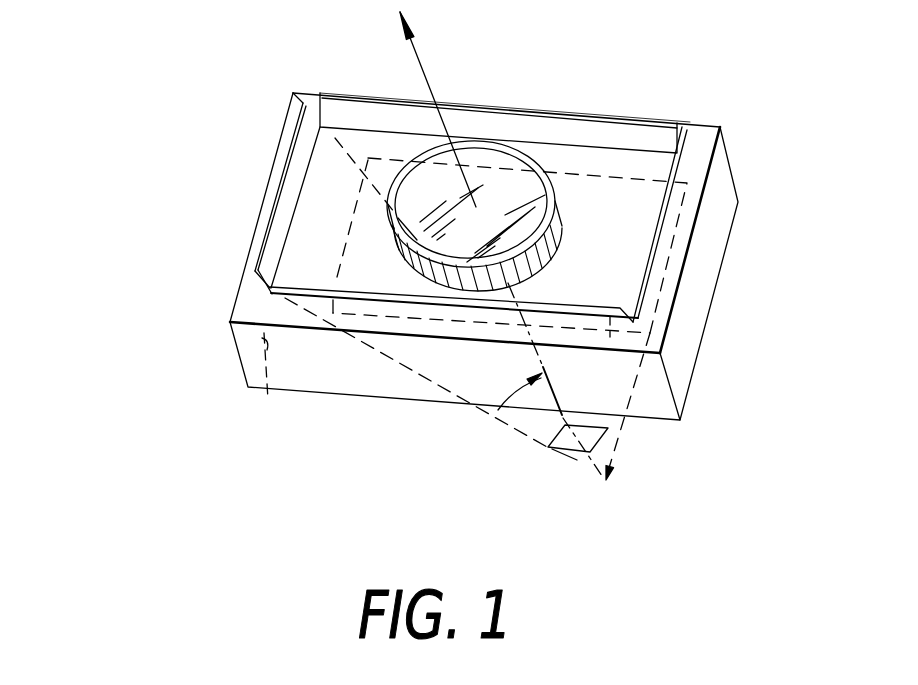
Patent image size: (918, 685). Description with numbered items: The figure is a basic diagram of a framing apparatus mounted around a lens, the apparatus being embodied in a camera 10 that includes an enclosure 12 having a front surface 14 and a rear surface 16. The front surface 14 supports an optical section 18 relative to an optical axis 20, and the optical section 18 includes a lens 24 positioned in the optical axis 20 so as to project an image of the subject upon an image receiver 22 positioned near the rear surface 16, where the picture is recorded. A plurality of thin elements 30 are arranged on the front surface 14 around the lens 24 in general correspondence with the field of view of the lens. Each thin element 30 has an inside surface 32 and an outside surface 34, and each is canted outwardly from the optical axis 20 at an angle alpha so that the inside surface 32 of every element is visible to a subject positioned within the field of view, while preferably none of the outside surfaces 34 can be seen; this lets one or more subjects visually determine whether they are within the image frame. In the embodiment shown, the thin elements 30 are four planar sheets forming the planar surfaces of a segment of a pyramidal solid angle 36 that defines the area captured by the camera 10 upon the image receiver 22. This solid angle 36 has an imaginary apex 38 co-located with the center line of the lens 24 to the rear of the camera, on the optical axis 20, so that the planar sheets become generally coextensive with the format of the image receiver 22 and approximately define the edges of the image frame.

The camera 10 is at (213, 110).
The enclosure 12 is at (237, 337).
The front surface 14 is at (698, 122).
The rear surface 16 is at (268, 398).
The optical section 18 is at (566, 158).
The optical axis 20 is at (421, 62).
The image receiver 22 is at (697, 222).
The lens 24 is at (546, 196).
The thin elements 30 is at (345, 93).
The inside surface 32 is at (515, 117).
The outside surface 34 is at (606, 353).
The pyramidal solid angle 36 is at (548, 448).
The apex 38 is at (608, 482).